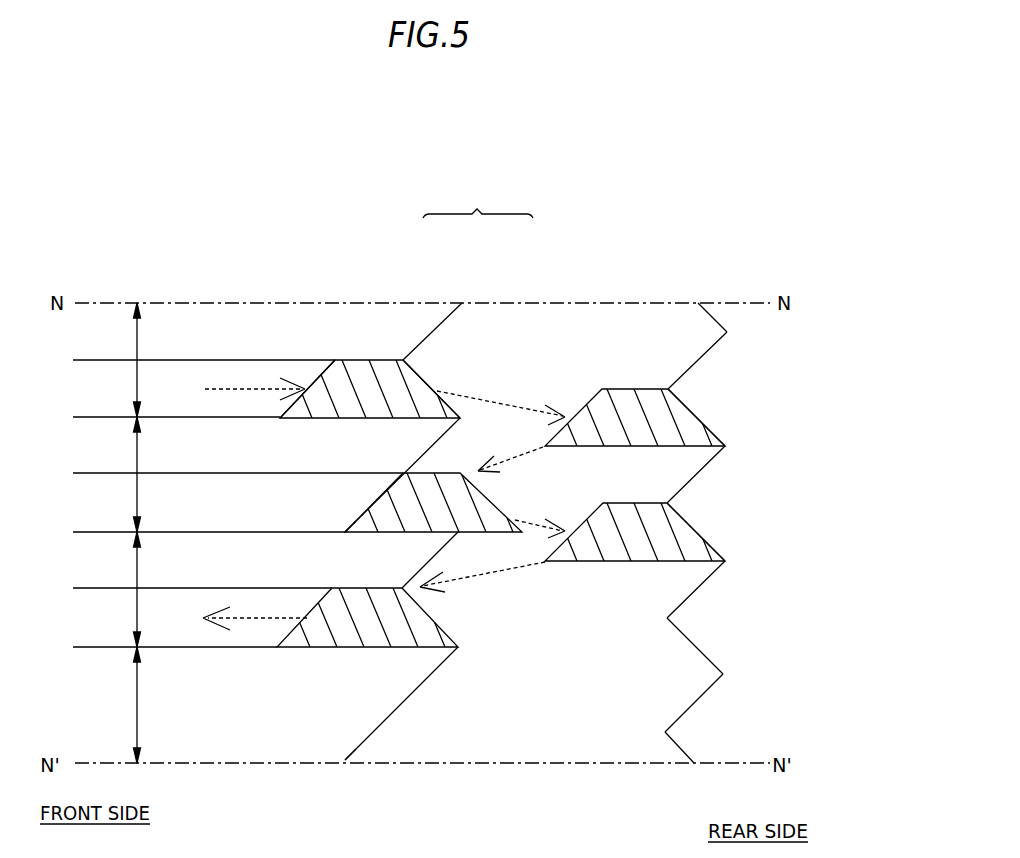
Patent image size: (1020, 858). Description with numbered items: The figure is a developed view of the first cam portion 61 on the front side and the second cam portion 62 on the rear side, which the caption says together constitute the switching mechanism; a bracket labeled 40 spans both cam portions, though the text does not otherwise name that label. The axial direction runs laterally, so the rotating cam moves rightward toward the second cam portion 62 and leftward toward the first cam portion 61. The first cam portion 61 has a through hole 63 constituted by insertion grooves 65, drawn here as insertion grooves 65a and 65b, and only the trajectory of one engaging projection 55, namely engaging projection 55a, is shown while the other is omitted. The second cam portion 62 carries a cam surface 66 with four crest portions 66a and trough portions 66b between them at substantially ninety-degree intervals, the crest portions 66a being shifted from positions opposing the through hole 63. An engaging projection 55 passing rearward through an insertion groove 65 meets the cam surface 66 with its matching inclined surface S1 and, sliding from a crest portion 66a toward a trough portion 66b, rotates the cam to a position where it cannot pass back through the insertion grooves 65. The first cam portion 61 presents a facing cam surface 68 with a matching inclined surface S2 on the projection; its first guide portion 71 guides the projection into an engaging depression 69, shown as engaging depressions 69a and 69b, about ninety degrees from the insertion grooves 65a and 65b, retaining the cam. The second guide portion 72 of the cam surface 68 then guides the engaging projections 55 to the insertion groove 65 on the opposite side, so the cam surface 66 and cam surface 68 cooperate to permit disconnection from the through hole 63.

The optical sheet 40 is at (478, 203).
The first cam portion 61 is at (410, 268).
The second cam portion 62 is at (509, 391).
The engaging projection 55 is at (377, 407).
The engaging projection 55a is at (326, 419).
The through hole 63 is at (337, 533).
The insertion groove 65 is at (344, 557).
The insertion groove 65a is at (163, 418).
The insertion groove 65b is at (163, 648).
The cam surface 66 is at (669, 536).
The crest portion 66a is at (666, 727).
The trough portion 66b is at (712, 665).
The cam surface 68 is at (500, 745).
The engaging depression 69 is at (328, 664).
The engaging depression 69a is at (347, 536).
The engaging depression 69b is at (349, 765).
The first guide portion 71 is at (416, 463).
The second guide portion 72 is at (440, 320).
The inclined surface S1 is at (420, 377).
The inclined surface S2 is at (320, 373).